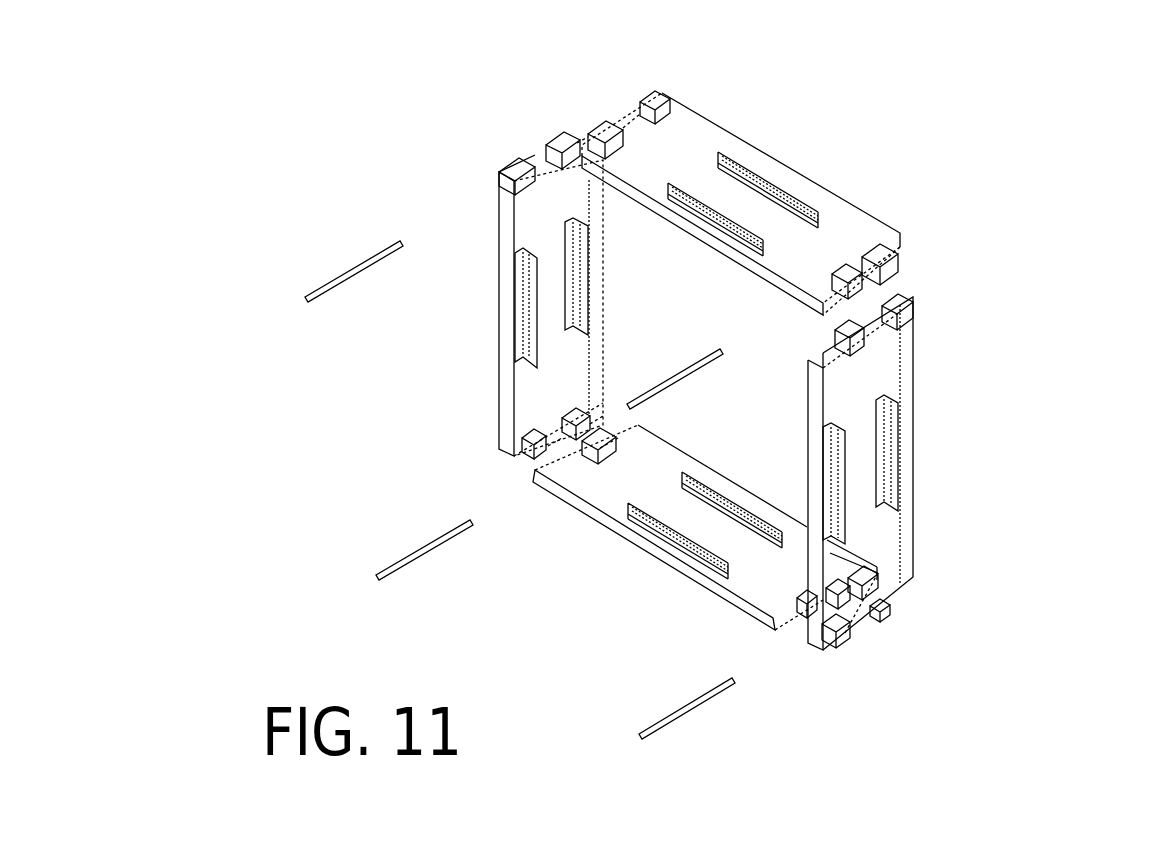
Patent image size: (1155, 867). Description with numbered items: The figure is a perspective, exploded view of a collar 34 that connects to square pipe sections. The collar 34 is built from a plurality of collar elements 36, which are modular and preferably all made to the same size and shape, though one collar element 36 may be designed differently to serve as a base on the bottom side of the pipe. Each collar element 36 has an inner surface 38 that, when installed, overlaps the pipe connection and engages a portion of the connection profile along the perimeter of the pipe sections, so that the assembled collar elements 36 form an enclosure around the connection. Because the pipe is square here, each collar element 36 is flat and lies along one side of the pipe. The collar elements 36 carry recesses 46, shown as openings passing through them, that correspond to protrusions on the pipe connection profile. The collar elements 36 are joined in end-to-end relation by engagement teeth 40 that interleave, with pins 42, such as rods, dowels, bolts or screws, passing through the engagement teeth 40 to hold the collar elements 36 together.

The collar 34 is at (1050, 170).
The collar element 36 is at (840, 210).
The inner surface 38 is at (607, 480).
The engagement teeth 40 is at (565, 133).
The pins 42 is at (358, 277).
The recesses 46 is at (765, 150).